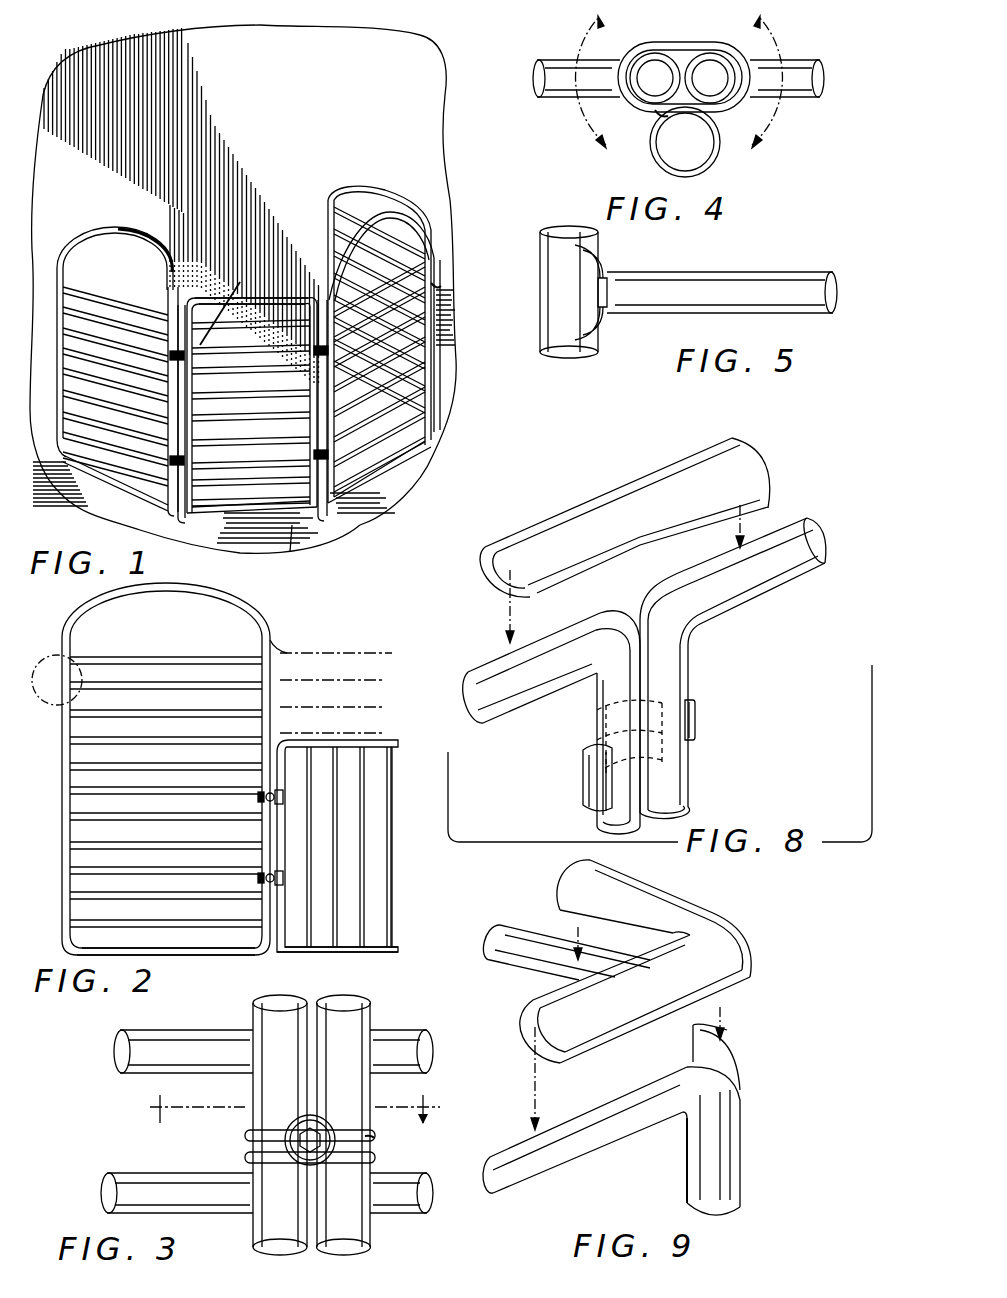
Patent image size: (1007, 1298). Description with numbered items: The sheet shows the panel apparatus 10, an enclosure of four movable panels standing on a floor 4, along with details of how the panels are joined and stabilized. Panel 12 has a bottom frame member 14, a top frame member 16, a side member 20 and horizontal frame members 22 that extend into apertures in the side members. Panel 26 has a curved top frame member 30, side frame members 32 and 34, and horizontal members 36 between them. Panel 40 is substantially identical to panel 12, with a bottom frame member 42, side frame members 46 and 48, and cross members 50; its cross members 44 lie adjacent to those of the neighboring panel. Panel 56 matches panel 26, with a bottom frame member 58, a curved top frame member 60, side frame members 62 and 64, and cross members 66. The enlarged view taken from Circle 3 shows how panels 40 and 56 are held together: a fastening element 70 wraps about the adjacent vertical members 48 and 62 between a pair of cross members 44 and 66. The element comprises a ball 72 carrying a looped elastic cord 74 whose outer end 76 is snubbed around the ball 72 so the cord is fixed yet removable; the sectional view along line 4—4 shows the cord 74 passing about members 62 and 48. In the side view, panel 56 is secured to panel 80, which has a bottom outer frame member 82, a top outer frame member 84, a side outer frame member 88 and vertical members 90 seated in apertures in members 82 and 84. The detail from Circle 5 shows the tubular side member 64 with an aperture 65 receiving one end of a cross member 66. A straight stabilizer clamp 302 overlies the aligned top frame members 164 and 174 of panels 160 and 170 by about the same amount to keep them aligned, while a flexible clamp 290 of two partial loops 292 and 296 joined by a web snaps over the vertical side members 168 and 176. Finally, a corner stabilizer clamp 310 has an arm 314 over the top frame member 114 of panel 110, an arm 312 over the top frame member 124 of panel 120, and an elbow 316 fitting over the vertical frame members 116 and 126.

In FIG. 1, the panel apparatus 10 is at (259, 371).
In FIG. 1, the panel 12 is at (379, 354).
In FIG. 1, the bottom horizontally extending frame member 14 is at (410, 430).
In FIG. 1, the top horizontally extending frame member 16 is at (380, 200).
In FIG. 1, the side member 20 is at (328, 256).
In FIG. 1, the horizontally extending frame members 22 is at (330, 226).
In FIG. 1, the panel 26 is at (406, 301).
In FIG. 1, the curved top frame member 30 is at (403, 196).
In FIG. 1, the side vertically extending frame member 32 is at (434, 430).
In FIG. 1, the side vertically extending frame member 34 is at (322, 508).
In FIG. 1, the horizontally extending members 36 is at (436, 258).
In FIG. 1, the Circle 3 is at (238, 280).
In FIG. 1, the floor 4 is at (296, 550).
In FIG. 3, the floor 4 is at (295, 1101).
In FIG. 2, the Circle 5 is at (53, 703).
In FIG. 1, the panel 40 is at (253, 416).
In FIG. 2, the panel 40 is at (345, 790).
In FIG. 3, the panel 40 is at (413, 1098).
In FIG. 1, the bottom horizontally extending frame member 42 is at (264, 520).
In FIG. 1, the horizontally extending cross members 44 is at (290, 296).
In FIG. 3, the horizontally extending cross members 44 is at (395, 1025).
In FIG. 4, the horizontally extending cross members 44 is at (796, 100).
In FIG. 1, the vertically extending side frame member 46 is at (320, 520).
In FIG. 1, the vertically extending side frame member 48 is at (181, 523).
In FIG. 3, the vertically extending side frame member 48 is at (366, 1236).
In FIG. 4, the vertically extending side frame member 48 is at (716, 50).
In FIG. 1, the horizontally extending cross members 50 is at (212, 506).
In FIG. 1, the panel 56 is at (113, 375).
In FIG. 2, the panel 56 is at (179, 779).
In FIG. 3, the panel 56 is at (154, 1116).
In FIG. 5, the panel 56 is at (568, 296).
In FIG. 1, the bottom horizontally extending frame member 58 is at (97, 493).
In FIG. 2, the bottom horizontally extending frame member 58 is at (248, 958).
In FIG. 1, the curved top frame member 60 is at (171, 282).
In FIG. 2, the curved top frame member 60 is at (212, 600).
In FIG. 1, the vertically extending side frame member 62 is at (160, 514).
In FIG. 2, the vertically extending side frame member 62 is at (270, 640).
In FIG. 3, the vertically extending side frame member 62 is at (256, 1018).
In FIG. 4, the vertically extending side frame member 62 is at (652, 50).
In FIG. 1, the vertically extending side frame member 64 is at (60, 275).
In FIG. 2, the vertically extending side frame member 64 is at (62, 786).
In FIG. 5, the vertically extending side frame member 64 is at (545, 345).
In FIG. 5, the aperture 65 is at (604, 308).
In FIG. 1, the horizontally extending cross members 66 is at (100, 276).
In FIG. 2, the horizontally extending cross members 66 is at (127, 690).
In FIG. 3, the horizontally extending cross members 66 is at (128, 1080).
In FIG. 4, the horizontally extending cross members 66 is at (553, 100).
In FIG. 5, the horizontally extending cross members 66 is at (718, 272).
In FIG. 1, the fastening element 70 is at (440, 288).
In FIG. 3, the fastening element 70 is at (302, 1138).
In FIG. 4, the fastening element 70 is at (679, 98).
In FIG. 3, the ball 72 is at (288, 1130).
In FIG. 4, the ball 72 is at (668, 162).
In FIG. 3, the elastic cord 74 is at (246, 1152).
In FIG. 4, the elastic cord 74 is at (678, 45).
In FIG. 3, the outer end 76 is at (374, 1138).
In FIG. 4, the outer end 76 is at (655, 112).
In FIG. 2, the panel 80 is at (349, 834).
In FIG. 2, the bottom horizontally extending outer frame member 82 is at (365, 958).
In FIG. 2, the top horizontally extending outer frame member 84 is at (394, 748).
In FIG. 2, the side vertically extending outer frame member 88 is at (268, 768).
In FIG. 2, the vertically extending members 90 is at (360, 868).
In FIG. 9, the panel 110 is at (634, 1119).
In FIG. 9, the top horizontally extending frame member 114 is at (572, 1160).
In FIG. 9, the vertically extending frame member 116 is at (742, 1150).
In FIG. 9, the panel 120 is at (559, 943).
In FIG. 9, the top horizontally extending frame member 124 is at (503, 970).
In FIG. 9, the vertically extending frame member 126 is at (686, 1145).
In FIG. 8, the panel 160 is at (745, 644).
In FIG. 8, the top horizontally extending frame member 164 is at (767, 592).
In FIG. 8, the vertically extending side frame member 168 is at (680, 680).
In FIG. 8, the panel 170 is at (553, 722).
In FIG. 8, the top horizontally extending frame member 174 is at (502, 702).
In FIG. 8, the vertically extending side frame member 176 is at (590, 700).
In FIG. 8, the clamp 290 is at (568, 786).
In FIG. 8, the partial loop 292 is at (586, 800).
In FIG. 8, the partial loop 296 is at (696, 728).
In FIG. 8, the straight stabilizer clamp 302 is at (590, 493).
In FIG. 9, the corner stabilizer clamp 310 is at (663, 971).
In FIG. 9, the arm 312 is at (648, 888).
In FIG. 9, the arm 314 is at (590, 1050).
In FIG. 9, the elbow 316 is at (757, 958).